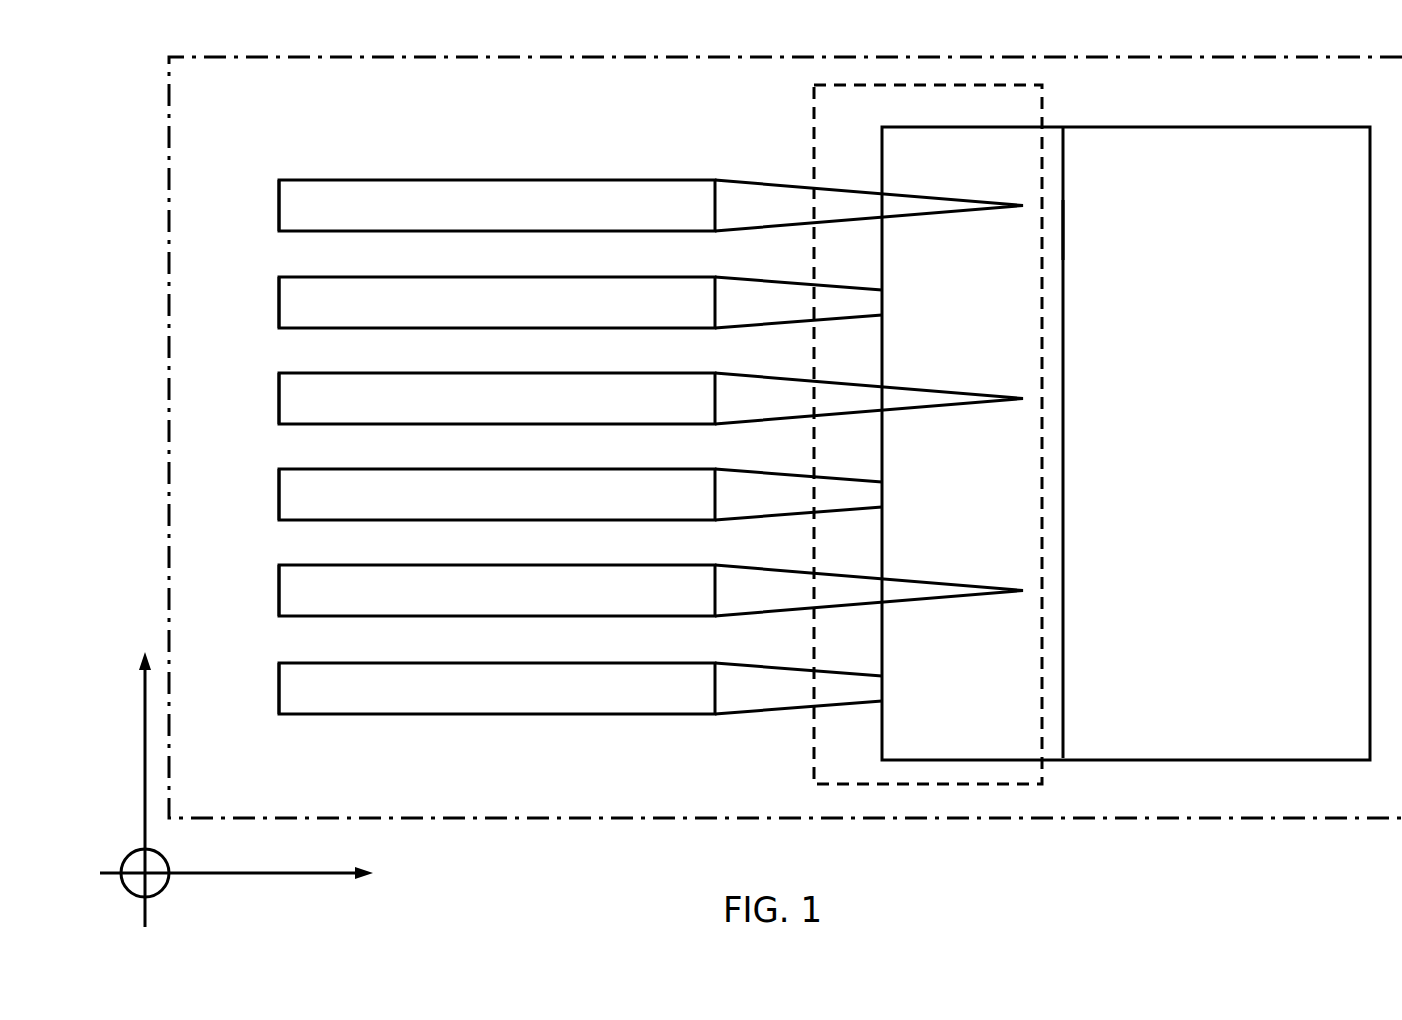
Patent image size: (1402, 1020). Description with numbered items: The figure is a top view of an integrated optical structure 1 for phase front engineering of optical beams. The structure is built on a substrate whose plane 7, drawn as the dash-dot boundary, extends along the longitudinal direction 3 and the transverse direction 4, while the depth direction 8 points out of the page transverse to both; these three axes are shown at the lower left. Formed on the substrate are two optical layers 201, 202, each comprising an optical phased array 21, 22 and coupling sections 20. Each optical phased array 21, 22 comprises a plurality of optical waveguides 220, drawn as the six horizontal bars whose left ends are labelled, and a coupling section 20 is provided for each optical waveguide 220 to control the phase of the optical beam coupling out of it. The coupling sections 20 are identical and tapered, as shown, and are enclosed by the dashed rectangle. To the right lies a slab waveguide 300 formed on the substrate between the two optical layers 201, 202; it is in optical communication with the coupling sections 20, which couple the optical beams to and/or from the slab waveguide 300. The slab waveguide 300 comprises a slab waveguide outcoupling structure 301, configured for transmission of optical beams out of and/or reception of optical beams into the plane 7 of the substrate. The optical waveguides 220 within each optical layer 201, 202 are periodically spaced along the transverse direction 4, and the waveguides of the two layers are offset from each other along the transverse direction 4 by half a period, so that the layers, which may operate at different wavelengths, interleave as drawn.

The integrated optical structure 1 is at (137, 181).
The plane 7 is at (208, 101).
The coupling section 20 is at (814, 110).
The optical phased array 21 is at (523, 277).
The optical phased array 22 is at (523, 180).
The optical layer 201 is at (338, 313).
The optical layer 202 is at (338, 216).
The optical waveguide 220 is at (279, 206).
The slab waveguide 300 is at (941, 164).
The slab waveguide outcoupling structure 301 is at (1185, 330).
The longitudinal direction 3 is at (345, 875).
The transverse direction 4 is at (145, 700).
The depth direction 8 is at (123, 856).